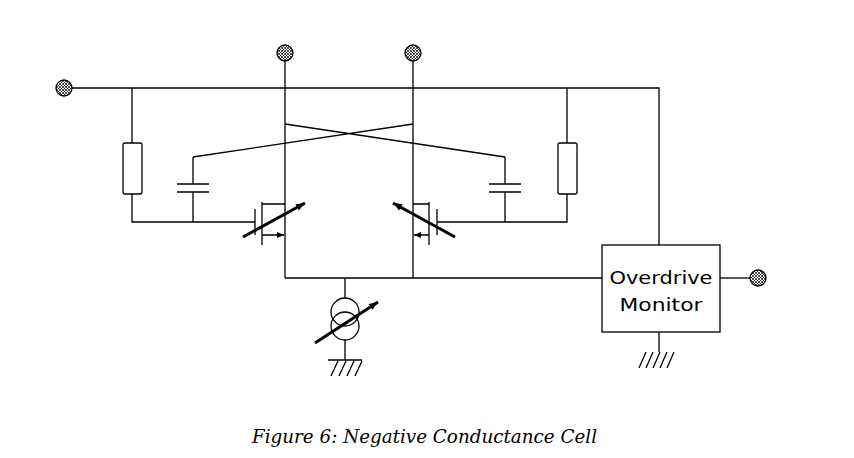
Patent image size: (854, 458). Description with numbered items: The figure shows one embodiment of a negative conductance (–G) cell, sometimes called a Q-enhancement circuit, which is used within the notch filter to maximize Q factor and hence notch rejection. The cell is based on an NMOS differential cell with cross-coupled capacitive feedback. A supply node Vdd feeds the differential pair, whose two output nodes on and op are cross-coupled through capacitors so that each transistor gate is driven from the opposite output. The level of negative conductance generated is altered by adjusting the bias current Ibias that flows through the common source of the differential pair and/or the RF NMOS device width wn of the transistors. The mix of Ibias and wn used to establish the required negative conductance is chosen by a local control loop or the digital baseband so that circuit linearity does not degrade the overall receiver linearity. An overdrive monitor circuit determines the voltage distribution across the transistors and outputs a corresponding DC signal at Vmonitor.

The supply voltage node Vdd is at (345, 150).
The negative output node on is at (295, 150).
The positive output node op is at (405, 150).
The RF NMOS device width wn is at (349, 223).
The bias current Ibias is at (321, 327).
The overdrive monitor output voltage Vmonitor is at (770, 265).